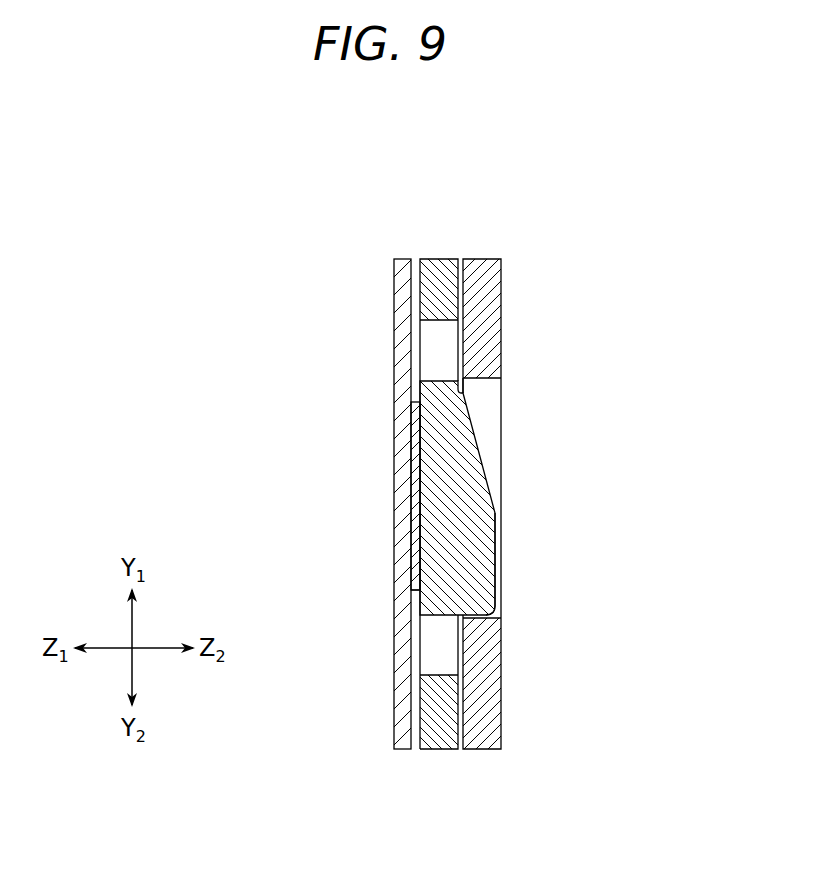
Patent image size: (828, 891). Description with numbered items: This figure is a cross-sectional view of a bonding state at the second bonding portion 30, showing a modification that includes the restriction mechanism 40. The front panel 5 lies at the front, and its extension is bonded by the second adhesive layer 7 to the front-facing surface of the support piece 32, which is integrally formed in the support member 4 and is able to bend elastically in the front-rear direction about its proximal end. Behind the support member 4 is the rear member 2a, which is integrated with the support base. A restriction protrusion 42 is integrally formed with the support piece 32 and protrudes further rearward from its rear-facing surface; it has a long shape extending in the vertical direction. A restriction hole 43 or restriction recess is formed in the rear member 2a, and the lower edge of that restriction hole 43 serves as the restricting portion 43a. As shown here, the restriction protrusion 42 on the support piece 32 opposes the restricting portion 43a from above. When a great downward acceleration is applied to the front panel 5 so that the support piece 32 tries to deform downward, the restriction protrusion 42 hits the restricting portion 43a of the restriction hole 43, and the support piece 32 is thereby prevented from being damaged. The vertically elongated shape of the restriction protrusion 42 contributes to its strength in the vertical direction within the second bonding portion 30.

The second bonding portion 30 is at (630, 322).
The support member 4 is at (445, 264).
The rear member 2a is at (487, 310).
The front panel 5 is at (393, 274).
The support piece 32 is at (422, 403).
The restriction hole 43 is at (492, 417).
The restriction mechanism 40 is at (487, 443).
The restriction protrusion 42 is at (489, 497).
The restricting portion 43a is at (478, 613).
The second adhesive layer 7 is at (417, 558).